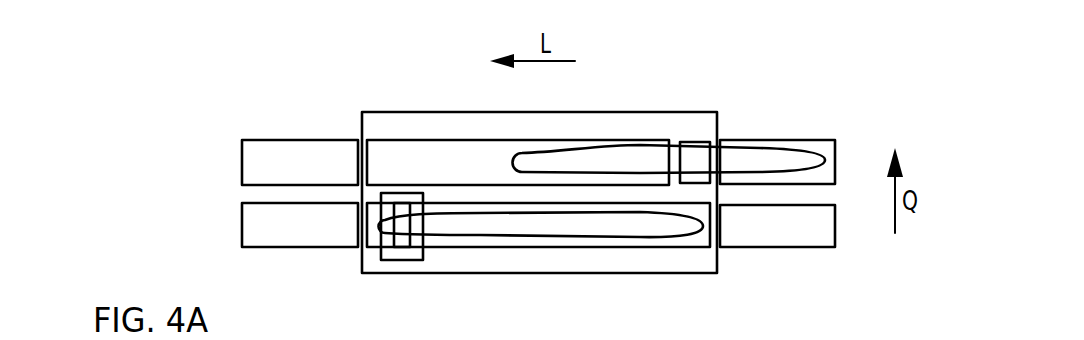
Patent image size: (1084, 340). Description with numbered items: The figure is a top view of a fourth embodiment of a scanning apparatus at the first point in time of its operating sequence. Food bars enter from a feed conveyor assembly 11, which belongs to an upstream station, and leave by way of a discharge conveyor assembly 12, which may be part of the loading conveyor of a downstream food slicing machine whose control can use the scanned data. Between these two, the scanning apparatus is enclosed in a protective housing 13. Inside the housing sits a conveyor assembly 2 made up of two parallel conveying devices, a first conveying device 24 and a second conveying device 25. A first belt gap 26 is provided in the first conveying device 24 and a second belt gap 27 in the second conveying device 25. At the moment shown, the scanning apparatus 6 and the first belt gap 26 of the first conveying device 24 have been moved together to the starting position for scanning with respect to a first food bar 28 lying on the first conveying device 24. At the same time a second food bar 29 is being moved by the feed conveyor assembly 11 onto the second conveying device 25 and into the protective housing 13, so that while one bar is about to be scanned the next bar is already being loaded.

The conveyor assembly 2 is at (627, 140).
The scanning apparatus 6 is at (388, 260).
The feed conveyor assembly 11 is at (799, 251).
The discharge conveyor assembly 12 is at (280, 251).
The protective housing 13 is at (377, 112).
The first conveying device 24 is at (462, 247).
The second conveying device 25 is at (450, 140).
The first belt gap 26 is at (400, 247).
The second belt gap 27 is at (670, 140).
The first food bar 28 is at (532, 230).
The second food bar 29 is at (763, 158).